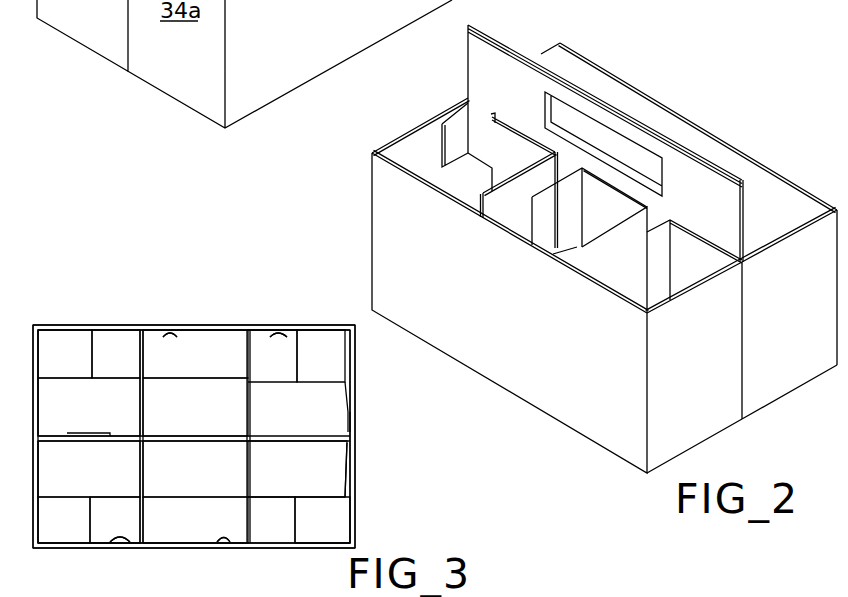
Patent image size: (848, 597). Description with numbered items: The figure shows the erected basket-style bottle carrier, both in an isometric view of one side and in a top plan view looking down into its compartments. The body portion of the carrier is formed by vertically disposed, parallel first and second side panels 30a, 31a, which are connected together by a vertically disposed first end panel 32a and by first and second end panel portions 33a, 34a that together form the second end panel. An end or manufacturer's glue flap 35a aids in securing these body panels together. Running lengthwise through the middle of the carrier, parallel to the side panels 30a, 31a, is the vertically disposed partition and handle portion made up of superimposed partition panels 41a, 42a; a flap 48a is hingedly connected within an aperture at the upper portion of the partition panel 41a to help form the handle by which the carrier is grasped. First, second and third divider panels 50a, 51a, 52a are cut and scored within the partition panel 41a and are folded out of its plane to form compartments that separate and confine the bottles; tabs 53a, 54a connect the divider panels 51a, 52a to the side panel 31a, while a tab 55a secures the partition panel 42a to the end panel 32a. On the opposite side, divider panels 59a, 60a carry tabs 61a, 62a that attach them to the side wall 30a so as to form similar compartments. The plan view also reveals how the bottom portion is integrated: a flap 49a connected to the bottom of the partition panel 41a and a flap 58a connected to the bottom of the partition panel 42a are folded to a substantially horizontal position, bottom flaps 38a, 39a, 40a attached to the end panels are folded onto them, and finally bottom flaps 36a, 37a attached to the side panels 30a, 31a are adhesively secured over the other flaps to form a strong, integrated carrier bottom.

In FIG. 2, the first side panel 30a is at (527, 306).
In FIG. 3, the first side panel 30a is at (273, 548).
In FIG. 2, the second side panel 31a is at (797, 220).
In FIG. 3, the second side panel 31a is at (236, 328).
In FIG. 2, the first end panel 32a is at (432, 163).
In FIG. 3, the first end panel 32a is at (358, 388).
In FIG. 2, the first end panel portion 33a is at (717, 370).
In FIG. 3, the first end panel portion 33a is at (28, 346).
In FIG. 2, the second end panel portion 34a is at (817, 315).
In FIG. 3, the second end panel portion 34a is at (28, 522).
In FIG. 2, the glue flap 35a is at (717, 271).
In FIG. 3, the glue flap 35a is at (68, 432).
In FIG. 3, the bottom flap 36a is at (220, 368).
In FIG. 3, the bottom flap 37a is at (205, 530).
In FIG. 3, the bottom flap 38a is at (343, 370).
In FIG. 3, the bottom flap 39a is at (87, 368).
In FIG. 3, the bottom flap 40a is at (87, 530).
In FIG. 2, the partition panel 41a is at (517, 80).
In FIG. 2, the partition panel 42a is at (520, 150).
In FIG. 2, the flap 48a is at (658, 170).
In FIG. 3, the flap 49a is at (217, 420).
In FIG. 2, the first divider panel 50a is at (627, 216).
In FIG. 2, the second divider panel 51a is at (627, 265).
In FIG. 3, the second divider panel 51a is at (116, 354).
In FIG. 2, the third divider panel 52a is at (527, 215).
In FIG. 3, the third divider panel 52a is at (250, 358).
In FIG. 3, the tab 53a is at (172, 335).
In FIG. 3, the tab 54a is at (292, 332).
In FIG. 2, the tab 55a is at (460, 127).
In FIG. 3, the tab 55a is at (356, 432).
In FIG. 3, the flap 58a is at (205, 478).
In FIG. 3, the divider panel 59a is at (320, 478).
In FIG. 3, the divider panel 60a is at (142, 468).
In FIG. 3, the tab 61a is at (218, 542).
In FIG. 3, the tab 62a is at (111, 542).